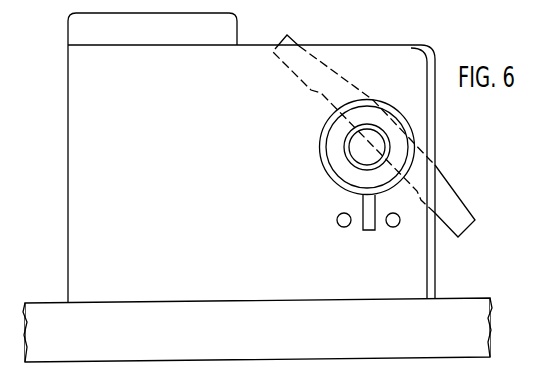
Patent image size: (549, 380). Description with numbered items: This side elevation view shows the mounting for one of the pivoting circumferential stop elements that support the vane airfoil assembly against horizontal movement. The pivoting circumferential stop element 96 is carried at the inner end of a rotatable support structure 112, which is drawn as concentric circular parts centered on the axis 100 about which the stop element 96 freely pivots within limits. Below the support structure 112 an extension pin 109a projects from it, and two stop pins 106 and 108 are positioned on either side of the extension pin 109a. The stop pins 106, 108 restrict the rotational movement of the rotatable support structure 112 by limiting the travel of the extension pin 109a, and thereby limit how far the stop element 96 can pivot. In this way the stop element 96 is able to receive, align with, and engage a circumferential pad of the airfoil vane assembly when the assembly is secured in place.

The pivoting circumferential stop element 96 is at (290, 37).
The rotatable support structure 112 is at (325, 128).
The axis 100 is at (368, 148).
The stop pin 106 is at (337, 220).
The extension pin 109a is at (366, 232).
The stop pin 108 is at (392, 228).